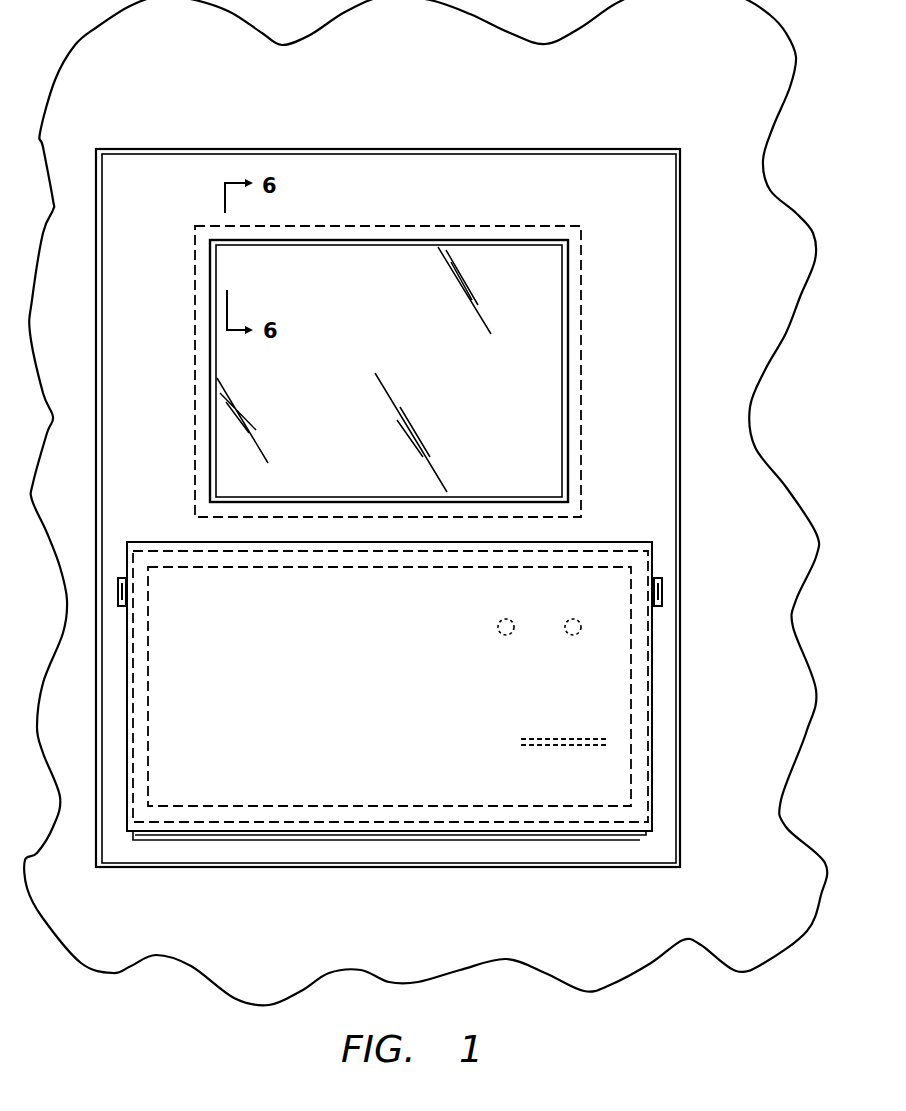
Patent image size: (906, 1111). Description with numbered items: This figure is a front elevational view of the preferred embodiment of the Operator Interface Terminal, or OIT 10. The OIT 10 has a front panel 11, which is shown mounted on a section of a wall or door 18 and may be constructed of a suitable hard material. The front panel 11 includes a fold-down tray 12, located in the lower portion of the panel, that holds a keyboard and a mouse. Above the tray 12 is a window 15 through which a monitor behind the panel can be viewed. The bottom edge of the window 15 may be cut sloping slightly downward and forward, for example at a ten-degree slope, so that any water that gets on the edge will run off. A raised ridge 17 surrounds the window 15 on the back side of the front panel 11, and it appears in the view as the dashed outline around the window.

The Operator Interface Terminal 10 is at (688, 115).
The front panel 11 is at (680, 330).
The fold-down tray 12 is at (654, 693).
The window 15 is at (568, 400).
The raised ridge 17 is at (582, 290).
The wall or door 18 is at (406, 918).